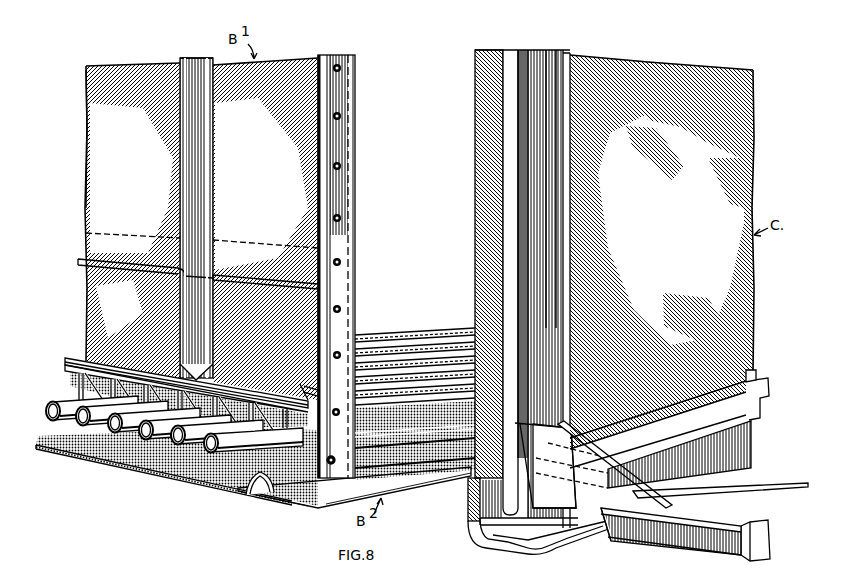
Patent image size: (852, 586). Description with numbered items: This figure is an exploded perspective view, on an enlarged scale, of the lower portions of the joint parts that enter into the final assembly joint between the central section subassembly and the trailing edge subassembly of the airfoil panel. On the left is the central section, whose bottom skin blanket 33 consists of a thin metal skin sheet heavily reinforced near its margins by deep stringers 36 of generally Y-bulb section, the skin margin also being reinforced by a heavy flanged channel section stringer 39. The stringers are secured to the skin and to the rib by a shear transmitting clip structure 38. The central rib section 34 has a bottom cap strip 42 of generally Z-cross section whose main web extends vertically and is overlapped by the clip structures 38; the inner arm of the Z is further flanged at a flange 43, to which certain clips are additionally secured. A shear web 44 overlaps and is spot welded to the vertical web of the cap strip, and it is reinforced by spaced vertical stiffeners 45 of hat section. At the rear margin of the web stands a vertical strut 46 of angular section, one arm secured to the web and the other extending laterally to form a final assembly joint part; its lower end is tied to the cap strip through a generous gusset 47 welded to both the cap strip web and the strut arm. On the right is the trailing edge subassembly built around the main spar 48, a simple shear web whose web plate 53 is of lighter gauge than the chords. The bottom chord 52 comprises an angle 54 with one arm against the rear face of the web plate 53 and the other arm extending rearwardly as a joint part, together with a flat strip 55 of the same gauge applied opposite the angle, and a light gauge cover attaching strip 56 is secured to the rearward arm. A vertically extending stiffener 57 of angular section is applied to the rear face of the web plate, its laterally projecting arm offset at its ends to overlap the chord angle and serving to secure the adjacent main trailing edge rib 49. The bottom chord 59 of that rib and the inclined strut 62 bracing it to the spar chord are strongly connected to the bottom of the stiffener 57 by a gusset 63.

The bottom skin blanket 33 is at (94, 452).
The central rib section 34 is at (84, 170).
The stringer 36 is at (140, 440).
The clip structure 38 is at (75, 390).
The flanged channel section stringer 39 is at (252, 486).
The bottom cap strip 42 is at (66, 363).
The flange 43 is at (340, 379).
The shear web 44 is at (82, 122).
The vertical stiffener 45 is at (172, 204).
The vertical strut 46 is at (332, 313).
The gusset 47 is at (334, 458).
The main spar 48 is at (467, 165).
The main trailing edge rib 49 is at (758, 396).
The bottom chord 52 is at (476, 541).
The web plate 53 is at (694, 254).
The angle 54 is at (470, 521).
The flat strip 55 is at (461, 496).
The cover attaching strip 56 is at (518, 546).
The vertical stiffener 57 is at (540, 54).
The bottom chord 59 is at (672, 536).
The inclined strut 62 is at (736, 364).
The gusset 63 is at (594, 495).